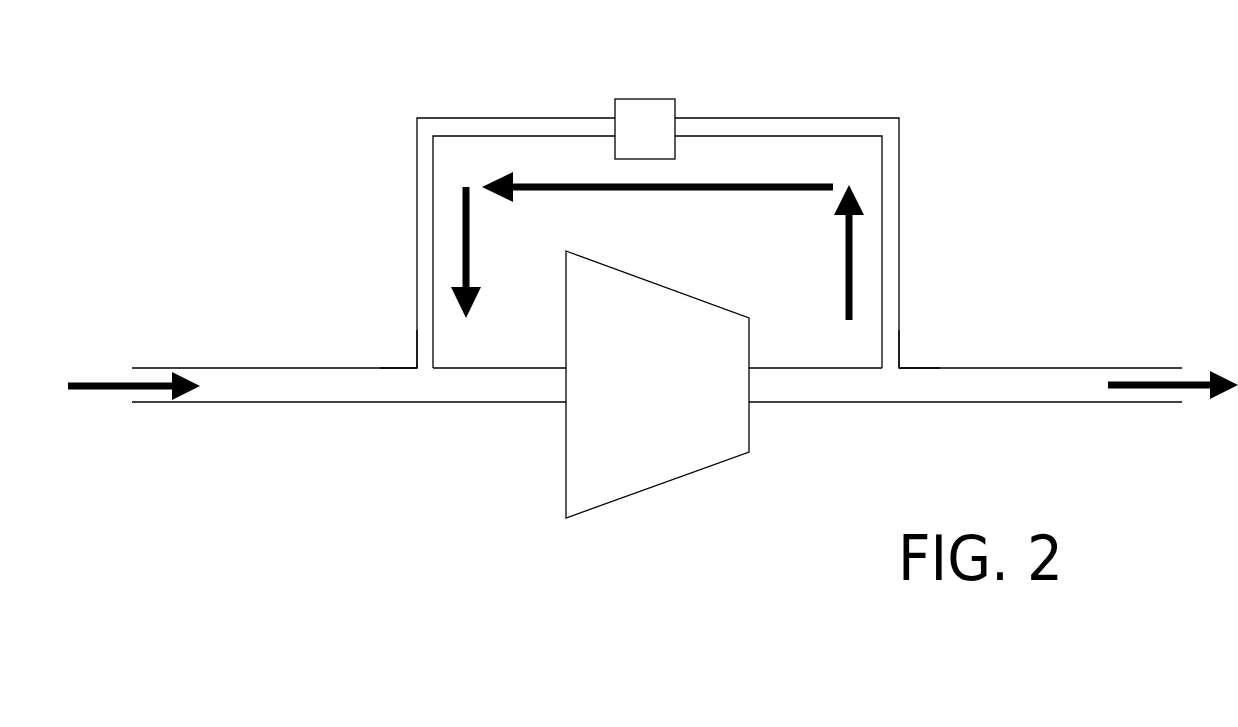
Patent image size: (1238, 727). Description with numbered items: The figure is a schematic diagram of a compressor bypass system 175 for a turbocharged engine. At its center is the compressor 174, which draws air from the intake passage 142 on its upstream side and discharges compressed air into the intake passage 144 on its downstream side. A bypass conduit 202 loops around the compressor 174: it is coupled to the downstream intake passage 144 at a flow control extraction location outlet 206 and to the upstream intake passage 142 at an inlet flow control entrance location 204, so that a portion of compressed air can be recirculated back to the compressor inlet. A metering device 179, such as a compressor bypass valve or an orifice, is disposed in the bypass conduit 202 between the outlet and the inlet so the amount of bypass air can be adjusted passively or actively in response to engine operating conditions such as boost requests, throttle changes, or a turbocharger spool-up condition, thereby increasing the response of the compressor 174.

The compressor bypass system 175 is at (306, 111).
The bypass conduit 202 is at (417, 173).
The inlet flow control entrance location 204 is at (417, 365).
The flow control extraction location outlet 206 is at (899, 355).
The intake passage 142 is at (331, 402).
The intake passage 144 is at (989, 403).
The compressor 174 is at (690, 473).
The metering device 179 is at (645, 99).